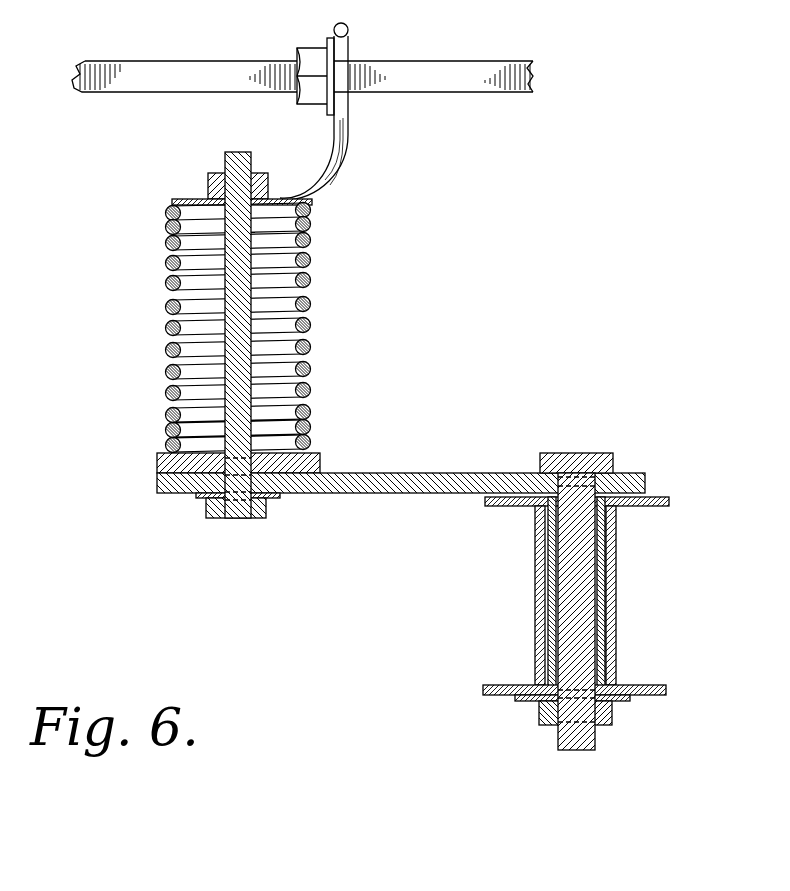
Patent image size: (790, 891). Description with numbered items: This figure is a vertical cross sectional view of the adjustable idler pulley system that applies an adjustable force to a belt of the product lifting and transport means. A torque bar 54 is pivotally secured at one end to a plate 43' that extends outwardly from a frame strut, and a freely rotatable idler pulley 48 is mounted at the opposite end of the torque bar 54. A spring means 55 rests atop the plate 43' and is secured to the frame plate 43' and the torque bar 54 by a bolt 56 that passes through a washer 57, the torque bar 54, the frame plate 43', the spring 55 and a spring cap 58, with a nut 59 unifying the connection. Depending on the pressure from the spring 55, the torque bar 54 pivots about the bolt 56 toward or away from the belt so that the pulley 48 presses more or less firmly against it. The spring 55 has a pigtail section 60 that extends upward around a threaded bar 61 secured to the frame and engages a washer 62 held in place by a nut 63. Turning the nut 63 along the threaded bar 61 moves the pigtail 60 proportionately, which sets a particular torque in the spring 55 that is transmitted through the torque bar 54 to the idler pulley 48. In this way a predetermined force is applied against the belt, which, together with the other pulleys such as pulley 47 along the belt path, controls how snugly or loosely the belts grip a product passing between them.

The pulley 47 is at (558, 293).
The idler pulley 48 is at (620, 601).
The torque bar 54 is at (386, 472).
The spring means 55 is at (310, 326).
The bolt 56 is at (246, 317).
The washer 57 is at (270, 496).
The spring cap 58 is at (316, 201).
The nut 59 is at (210, 186).
The pigtail section 60 is at (343, 150).
The threaded bar 61 is at (398, 62).
The washer 62 is at (330, 40).
The nut 63 is at (305, 60).
The plate 43' is at (194, 469).